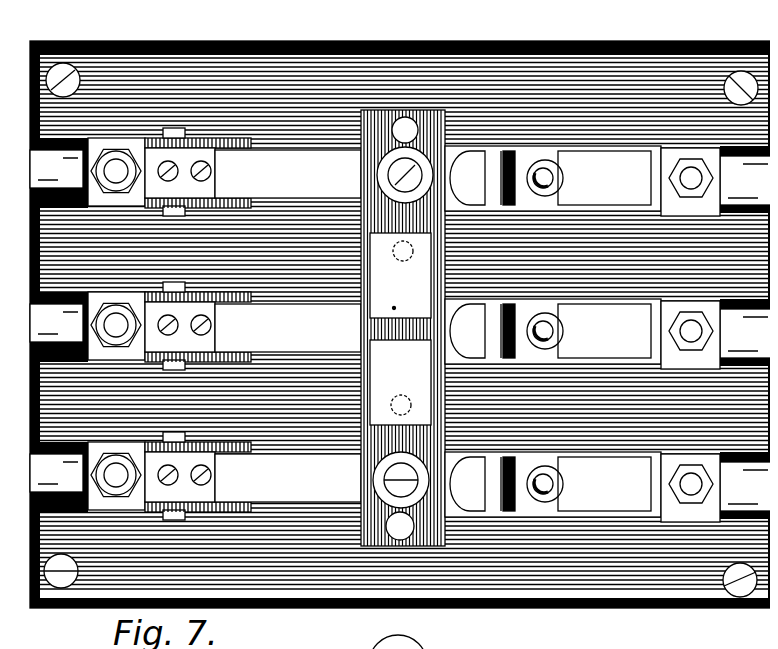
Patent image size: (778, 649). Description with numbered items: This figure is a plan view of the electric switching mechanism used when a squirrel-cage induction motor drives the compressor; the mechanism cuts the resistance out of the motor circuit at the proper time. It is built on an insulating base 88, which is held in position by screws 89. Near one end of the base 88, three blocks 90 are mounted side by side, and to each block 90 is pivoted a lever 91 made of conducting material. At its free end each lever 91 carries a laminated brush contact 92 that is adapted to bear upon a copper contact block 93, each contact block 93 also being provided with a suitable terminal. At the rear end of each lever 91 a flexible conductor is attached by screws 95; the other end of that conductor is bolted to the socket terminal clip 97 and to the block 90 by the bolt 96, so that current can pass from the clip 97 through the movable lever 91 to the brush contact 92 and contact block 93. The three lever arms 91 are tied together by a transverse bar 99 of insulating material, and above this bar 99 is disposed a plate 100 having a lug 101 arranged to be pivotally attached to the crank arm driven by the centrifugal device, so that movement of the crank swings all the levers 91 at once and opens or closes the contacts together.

The base 88 is at (348, 58).
The screws 89 is at (737, 67).
The blocks 90 is at (195, 137).
The lever 91 is at (288, 326).
The laminated brush contact 92 is at (553, 331).
The contact block 93 is at (623, 142).
The screws 95 is at (205, 163).
The bolt 96 is at (102, 153).
The socket terminal clip 97 is at (400, 328).
The transverse bar 99 is at (417, 103).
The plate 100 is at (400, 275).
The lug 101 is at (396, 324).